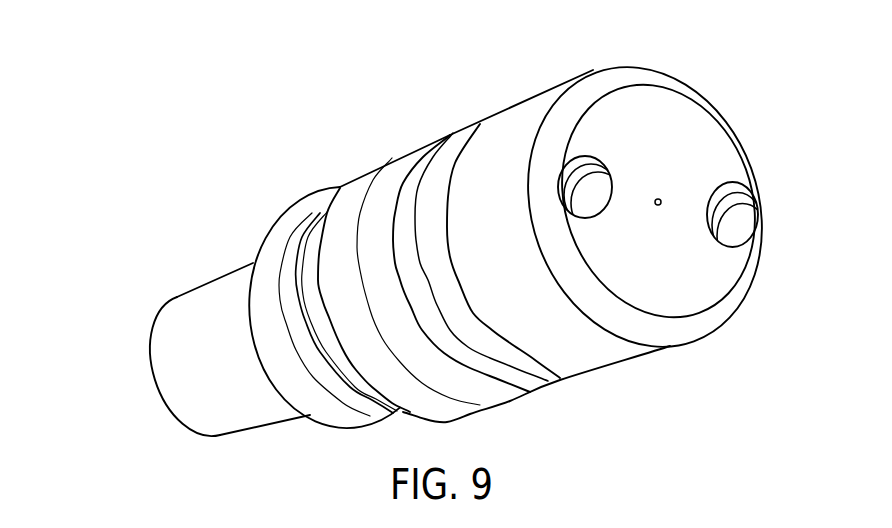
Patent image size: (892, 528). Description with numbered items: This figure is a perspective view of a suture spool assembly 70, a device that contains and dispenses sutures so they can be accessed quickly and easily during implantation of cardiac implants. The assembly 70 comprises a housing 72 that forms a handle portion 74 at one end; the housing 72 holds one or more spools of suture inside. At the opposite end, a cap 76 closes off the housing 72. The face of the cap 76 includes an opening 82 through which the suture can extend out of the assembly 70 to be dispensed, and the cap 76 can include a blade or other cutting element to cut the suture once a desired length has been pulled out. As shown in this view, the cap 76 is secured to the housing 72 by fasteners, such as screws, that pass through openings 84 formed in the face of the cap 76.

The suture spool assembly 70 is at (117, 185).
The housing 72 is at (470, 121).
The handle portion 74 is at (327, 169).
The cap 76 is at (622, 65).
The opening 82 is at (661, 197).
The openings 84 is at (604, 209).